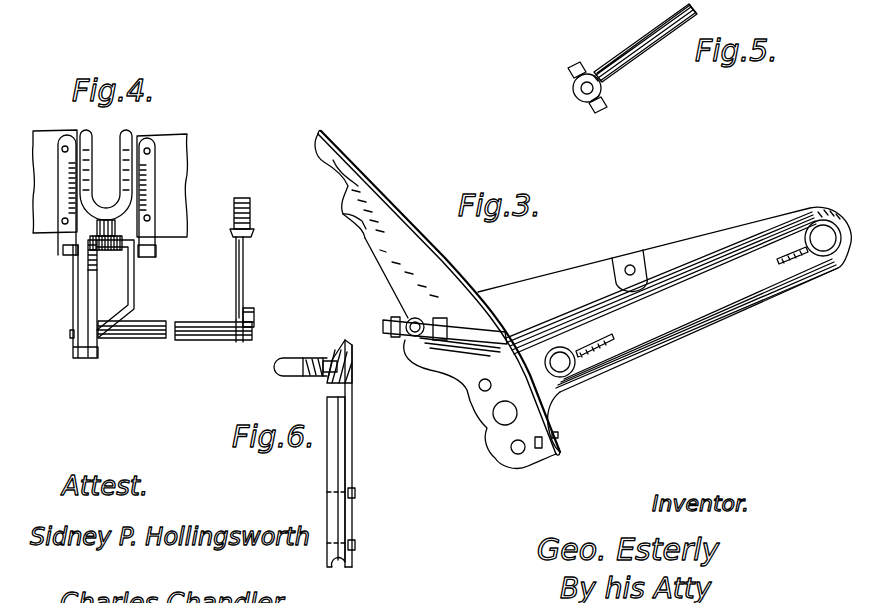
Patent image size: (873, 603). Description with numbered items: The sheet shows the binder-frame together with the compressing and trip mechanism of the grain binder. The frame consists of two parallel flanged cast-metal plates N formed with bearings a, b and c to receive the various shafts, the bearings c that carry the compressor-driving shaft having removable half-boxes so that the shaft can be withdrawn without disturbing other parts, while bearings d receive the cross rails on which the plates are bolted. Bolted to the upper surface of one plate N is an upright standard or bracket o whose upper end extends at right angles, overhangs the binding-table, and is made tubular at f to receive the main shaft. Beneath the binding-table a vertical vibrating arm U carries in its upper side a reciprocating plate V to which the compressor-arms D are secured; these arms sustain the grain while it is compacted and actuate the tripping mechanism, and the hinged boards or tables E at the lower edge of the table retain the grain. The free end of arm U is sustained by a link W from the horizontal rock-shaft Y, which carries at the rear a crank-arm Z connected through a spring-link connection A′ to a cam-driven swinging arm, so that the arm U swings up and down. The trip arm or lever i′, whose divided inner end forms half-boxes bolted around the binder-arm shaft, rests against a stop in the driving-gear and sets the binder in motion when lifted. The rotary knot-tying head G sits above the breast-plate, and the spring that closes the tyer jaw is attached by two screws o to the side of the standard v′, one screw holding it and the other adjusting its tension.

In FIG. 4, the hinged boards or tables E is at (110, 193).
In FIG. 4, the compressor-arms D is at (106, 183).
In FIG. 4, the reciprocating plate V is at (122, 243).
In FIG. 4, the vertical vibrating arm U is at (101, 298).
In FIG. 4, the link W is at (102, 299).
In FIG. 4, the horizontal rock-shaft Y is at (175, 320).
In FIG. 4, the spring-link connection A′ is at (251, 212).
In FIG. 4, the crank-arm Z is at (256, 319).
In FIG. 5, the arm or lever i′ is at (632, 58).
In FIG. 3, the cast-metal bars or plates N is at (439, 292).
In FIG. 3, the bearings d is at (416, 279).
In FIG. 3, the bearings c is at (411, 319).
In FIG. 3, the bearings b is at (481, 381).
In FIG. 3, the bearings a is at (522, 452).
In FIG. 3, the upright standard or bracket o is at (664, 299).
In FIG. 6, the upright standard or bracket o is at (357, 518).
In FIG. 3, the tubular end f is at (823, 233).
In FIG. 6, the upright or standard v′ is at (335, 473).
In FIG. 6, the rotary knot-tying head G is at (313, 360).